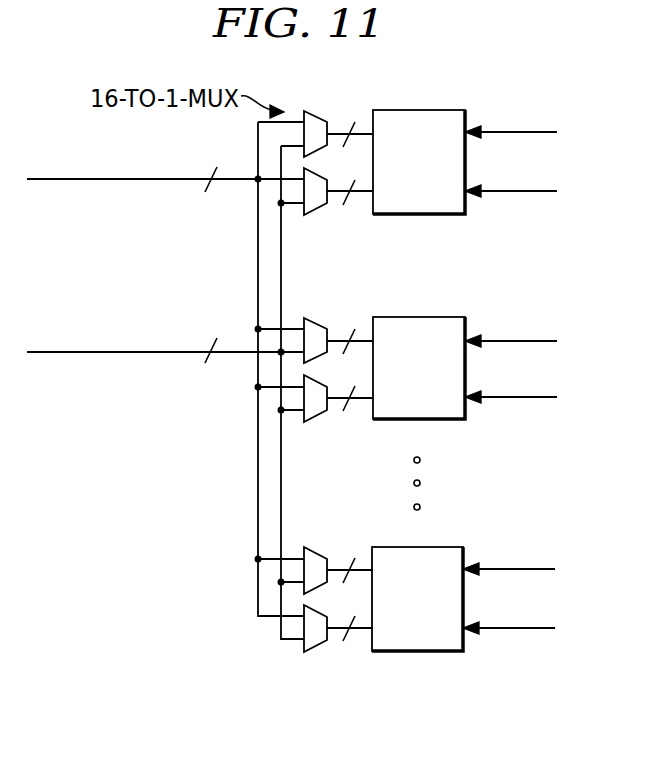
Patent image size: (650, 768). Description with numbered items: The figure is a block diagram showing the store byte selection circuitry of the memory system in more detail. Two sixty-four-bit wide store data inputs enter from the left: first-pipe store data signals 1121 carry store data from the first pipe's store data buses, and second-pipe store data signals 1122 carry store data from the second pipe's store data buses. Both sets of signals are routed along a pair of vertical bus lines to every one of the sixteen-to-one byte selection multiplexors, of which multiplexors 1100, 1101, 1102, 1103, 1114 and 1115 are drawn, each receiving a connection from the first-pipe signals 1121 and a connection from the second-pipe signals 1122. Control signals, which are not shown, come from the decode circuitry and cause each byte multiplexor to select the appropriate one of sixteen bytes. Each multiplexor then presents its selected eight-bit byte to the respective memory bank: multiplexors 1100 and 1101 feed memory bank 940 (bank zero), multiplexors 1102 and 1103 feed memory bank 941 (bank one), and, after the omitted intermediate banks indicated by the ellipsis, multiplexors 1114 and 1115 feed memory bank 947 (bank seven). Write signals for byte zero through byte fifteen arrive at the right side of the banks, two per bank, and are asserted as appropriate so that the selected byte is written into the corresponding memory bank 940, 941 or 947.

The memory bank 940 is at (418, 110).
The memory bank 941 is at (418, 317).
The memory bank 947 is at (415, 652).
The byte selection multiplexor 1100 is at (340, 96).
The byte selection multiplexor 1101 is at (316, 211).
The byte selection multiplexor 1102 is at (340, 304).
The byte selection multiplexor 1103 is at (316, 418).
The byte selection multiplexor 1114 is at (338, 531).
The byte selection multiplexor 1115 is at (316, 649).
The pipe 1 store data signals 1121 is at (143, 182).
The pipe 2 store data signals 1122 is at (153, 356).